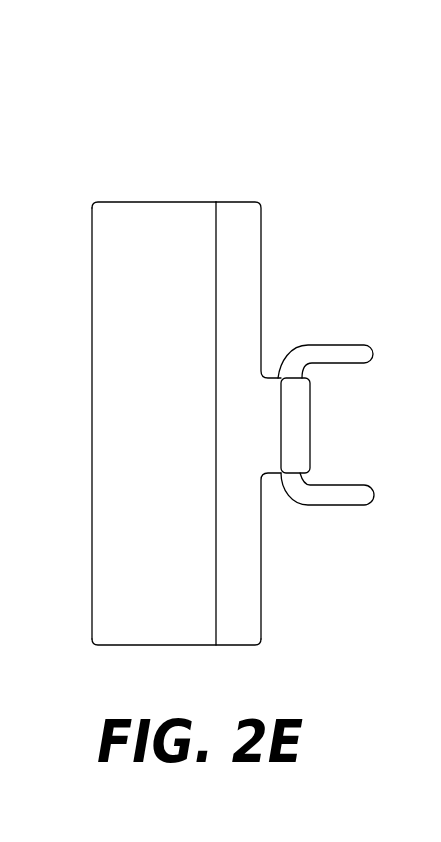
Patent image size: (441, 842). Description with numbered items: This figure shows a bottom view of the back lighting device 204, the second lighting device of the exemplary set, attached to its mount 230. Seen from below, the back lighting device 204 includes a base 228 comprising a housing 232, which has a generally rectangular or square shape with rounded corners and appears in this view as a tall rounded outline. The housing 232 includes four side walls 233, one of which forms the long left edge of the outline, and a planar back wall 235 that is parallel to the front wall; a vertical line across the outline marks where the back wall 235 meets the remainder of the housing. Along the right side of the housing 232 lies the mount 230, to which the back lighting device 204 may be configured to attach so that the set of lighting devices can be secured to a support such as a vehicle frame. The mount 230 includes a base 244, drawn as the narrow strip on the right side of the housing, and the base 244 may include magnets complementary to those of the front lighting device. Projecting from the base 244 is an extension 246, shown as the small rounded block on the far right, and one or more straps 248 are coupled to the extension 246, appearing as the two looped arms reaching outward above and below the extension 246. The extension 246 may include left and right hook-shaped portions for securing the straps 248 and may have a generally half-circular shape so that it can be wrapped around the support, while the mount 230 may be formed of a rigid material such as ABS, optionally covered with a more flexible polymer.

The back lighting device 204 is at (159, 120).
The base 228 is at (182, 183).
The mount 230 is at (280, 233).
The housing 232 is at (163, 645).
The side walls 233 is at (113, 599).
The back wall 235 is at (216, 202).
The base 244 is at (247, 593).
The extension 246 is at (295, 430).
The straps 248 is at (372, 353).